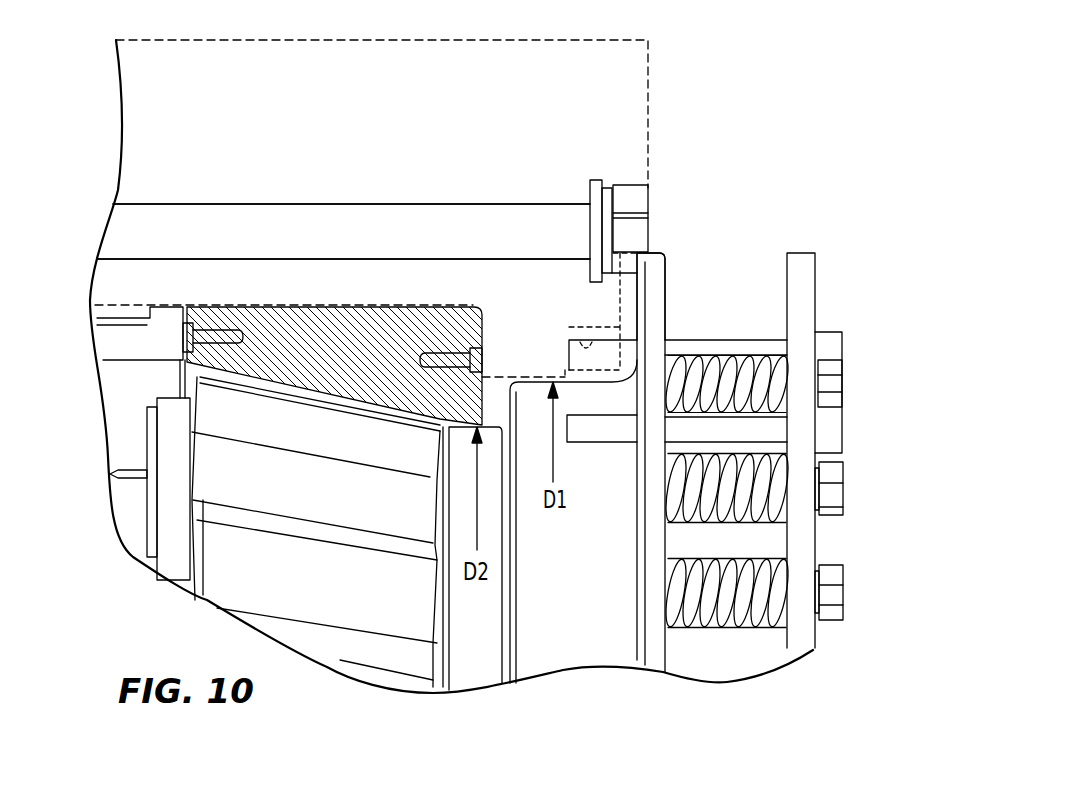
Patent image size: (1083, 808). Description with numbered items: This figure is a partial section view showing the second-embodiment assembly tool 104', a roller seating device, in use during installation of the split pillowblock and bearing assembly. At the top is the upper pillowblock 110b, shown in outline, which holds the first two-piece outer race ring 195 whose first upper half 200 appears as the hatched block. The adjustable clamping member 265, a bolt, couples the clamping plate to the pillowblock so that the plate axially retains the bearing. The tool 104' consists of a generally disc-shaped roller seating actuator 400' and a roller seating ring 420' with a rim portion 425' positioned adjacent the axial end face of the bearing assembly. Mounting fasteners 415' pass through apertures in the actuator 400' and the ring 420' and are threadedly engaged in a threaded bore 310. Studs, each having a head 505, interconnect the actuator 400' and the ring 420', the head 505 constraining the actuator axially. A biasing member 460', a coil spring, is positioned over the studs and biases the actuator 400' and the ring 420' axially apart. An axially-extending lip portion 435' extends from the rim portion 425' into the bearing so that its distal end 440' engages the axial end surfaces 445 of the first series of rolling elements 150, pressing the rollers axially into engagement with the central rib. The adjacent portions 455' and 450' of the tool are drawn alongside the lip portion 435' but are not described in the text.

The upper pillowblock 110b is at (330, 100).
The first two-piece outer race ring 195 is at (332, 285).
The first upper half 200 is at (292, 320).
The adjustable clamping member 265 is at (147, 232).
The threaded bore 310 is at (569, 327).
The roller seating ring 420' is at (696, 248).
The rim portion 425' is at (696, 248).
The roller seating actuator 400' is at (817, 410).
The assembly tool 104' is at (805, 419).
The mounting fastener 415' is at (872, 392).
The head 505 is at (838, 487).
The biasing member 460' is at (787, 484).
The first series of rolling elements 150 is at (227, 467).
The axial end surface 445 is at (440, 545).
The distal end 440' is at (376, 670).
The plate 455' is at (497, 583).
The lip portion 435' is at (573, 550).
The bar 450' is at (651, 493).